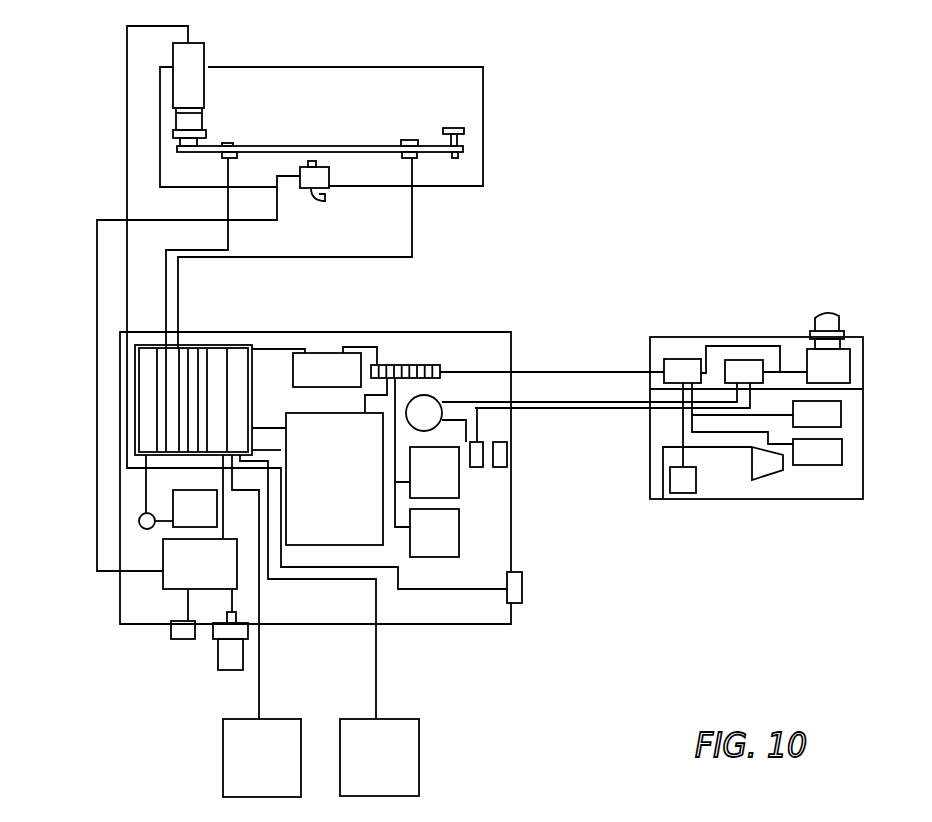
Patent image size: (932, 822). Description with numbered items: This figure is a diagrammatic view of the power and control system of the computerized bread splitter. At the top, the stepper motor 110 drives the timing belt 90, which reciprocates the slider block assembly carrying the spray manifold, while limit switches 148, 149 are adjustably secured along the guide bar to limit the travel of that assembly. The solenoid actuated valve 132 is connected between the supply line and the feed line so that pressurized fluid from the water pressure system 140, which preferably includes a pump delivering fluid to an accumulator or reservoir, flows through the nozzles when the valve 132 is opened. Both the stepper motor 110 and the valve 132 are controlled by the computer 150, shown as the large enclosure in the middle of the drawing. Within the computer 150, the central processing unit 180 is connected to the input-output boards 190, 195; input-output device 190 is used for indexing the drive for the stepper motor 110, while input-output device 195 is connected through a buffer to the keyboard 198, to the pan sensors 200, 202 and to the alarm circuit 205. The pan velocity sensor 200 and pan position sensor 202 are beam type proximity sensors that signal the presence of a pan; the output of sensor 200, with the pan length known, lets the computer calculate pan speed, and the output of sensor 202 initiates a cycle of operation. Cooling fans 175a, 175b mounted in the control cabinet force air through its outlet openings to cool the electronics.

The stepper motor 110 is at (193, 62).
The limit switch 148 is at (233, 143).
The timing belt 90 is at (290, 146).
The limit switch 149 is at (410, 140).
The solenoid actuated valve 132 is at (318, 176).
The input-output board 195 is at (203, 348).
The central processing unit 180 is at (240, 352).
The input-output board 190 is at (138, 362).
The computerized control panel 150 is at (118, 392).
The keyboard 198 is at (204, 523).
The alarm circuit 205 is at (186, 630).
The pan velocity sensor 200 is at (240, 750).
The pan position sensor 202 is at (398, 756).
The cooling fan 175a is at (443, 475).
The cooling fan 175b is at (448, 542).
The water pressure system 140 is at (864, 389).